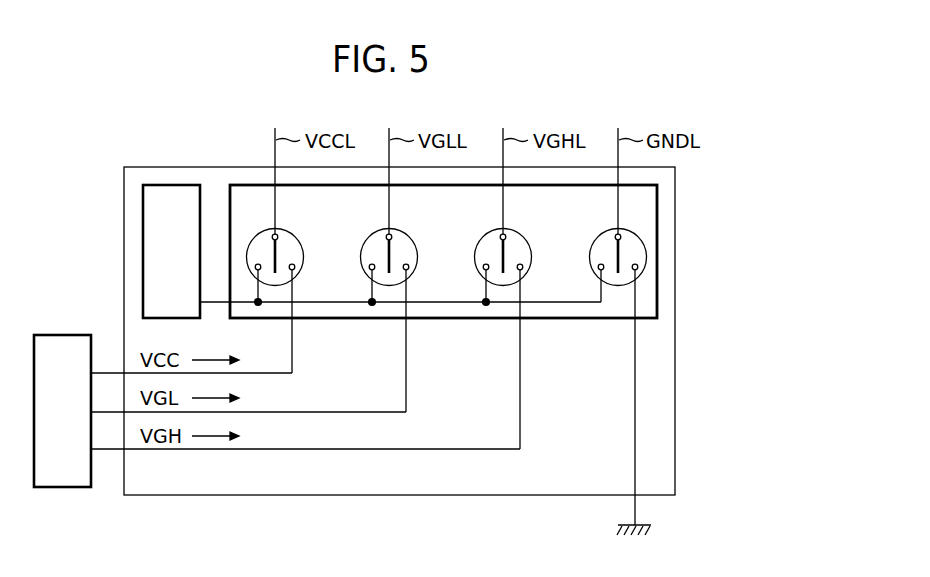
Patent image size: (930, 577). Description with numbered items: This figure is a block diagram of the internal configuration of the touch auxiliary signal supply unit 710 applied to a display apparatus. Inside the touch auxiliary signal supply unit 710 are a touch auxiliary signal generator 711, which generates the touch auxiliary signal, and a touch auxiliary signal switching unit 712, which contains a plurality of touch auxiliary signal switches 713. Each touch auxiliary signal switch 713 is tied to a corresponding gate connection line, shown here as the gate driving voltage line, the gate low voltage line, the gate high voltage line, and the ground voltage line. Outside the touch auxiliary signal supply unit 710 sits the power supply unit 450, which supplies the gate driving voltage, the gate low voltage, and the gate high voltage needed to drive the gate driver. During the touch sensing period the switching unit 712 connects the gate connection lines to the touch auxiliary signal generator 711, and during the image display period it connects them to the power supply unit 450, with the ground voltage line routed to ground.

The power supply unit 450 is at (78, 423).
The touch auxiliary signal supply unit 710 is at (675, 272).
The touch auxiliary signal generator 711 is at (186, 267).
The touch auxiliary signal switching unit 712 is at (657, 222).
The touch auxiliary signal switch 713 is at (290, 232).